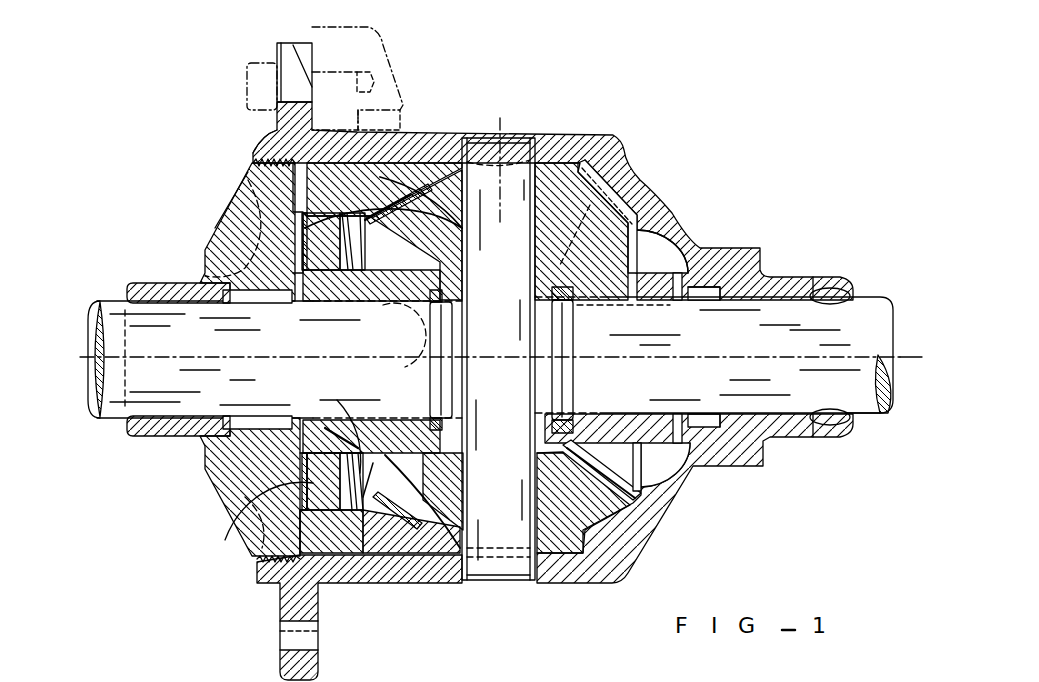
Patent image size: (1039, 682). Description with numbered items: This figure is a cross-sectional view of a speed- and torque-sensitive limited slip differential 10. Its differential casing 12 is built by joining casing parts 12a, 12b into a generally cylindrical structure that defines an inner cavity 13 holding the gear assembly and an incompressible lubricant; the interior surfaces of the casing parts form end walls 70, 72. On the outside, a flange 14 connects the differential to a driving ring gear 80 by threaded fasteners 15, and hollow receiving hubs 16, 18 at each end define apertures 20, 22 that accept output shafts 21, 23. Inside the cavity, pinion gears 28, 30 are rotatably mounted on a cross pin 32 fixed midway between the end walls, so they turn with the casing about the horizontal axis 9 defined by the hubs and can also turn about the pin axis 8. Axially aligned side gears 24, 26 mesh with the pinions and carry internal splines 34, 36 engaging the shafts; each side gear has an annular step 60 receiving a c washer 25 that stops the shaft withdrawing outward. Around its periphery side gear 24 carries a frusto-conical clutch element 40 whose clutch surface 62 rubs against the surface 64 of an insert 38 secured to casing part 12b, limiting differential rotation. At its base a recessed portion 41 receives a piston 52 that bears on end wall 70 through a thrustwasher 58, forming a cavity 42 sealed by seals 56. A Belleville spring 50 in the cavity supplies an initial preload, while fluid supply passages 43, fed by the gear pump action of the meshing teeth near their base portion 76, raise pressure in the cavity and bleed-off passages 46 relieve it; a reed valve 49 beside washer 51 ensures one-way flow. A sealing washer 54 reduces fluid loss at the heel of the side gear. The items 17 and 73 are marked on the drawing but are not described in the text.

The axis 8 is at (500, 140).
The axis 9 is at (907, 357).
The limited slip differential 10 is at (738, 140).
The differential casing 12 is at (738, 247).
The casing part 12a is at (213, 257).
The casing part 12b is at (613, 140).
The inner cavity 13 is at (597, 530).
The flange 14 is at (277, 45).
The threaded fastener 15 is at (242, 68).
The receiving hub 16 is at (143, 282).
The flange 17 is at (267, 128).
The receiving hub 18 is at (795, 277).
The aperture 20 is at (123, 298).
The output shaft 21 is at (105, 422).
The aperture 22 is at (853, 292).
The output shaft 23 is at (863, 417).
The side gear 24 is at (397, 423).
The c washer 25 is at (545, 307).
The side gear 26 is at (660, 290).
The pinion gear 28 is at (550, 183).
The pinion gear 30 is at (560, 522).
The cross pin 32 is at (520, 147).
The internal spline 34 is at (405, 360).
The internal spline 36 is at (610, 314).
The insert 38 is at (437, 167).
The frusto-conical clutch element 40 is at (405, 103).
The recessed portion 41 is at (325, 555).
The cavity 42 is at (364, 262).
The fluid supply passage 43 is at (415, 257).
The bleed-off passage 46 is at (347, 272).
The reed valve 49 is at (460, 217).
The Belleville spring 50 is at (357, 440).
The washer 51 is at (420, 163).
The piston 52 is at (233, 207).
The sealing washer 54 is at (438, 170).
The seal 56 is at (307, 287).
The thrustwasher 58 is at (253, 187).
The annular step 60 is at (560, 432).
The clutch surface 62 is at (253, 161).
The insert surface 64 is at (390, 182).
The end wall 70 is at (222, 227).
The end wall 72 is at (672, 222).
The gear hub 73 is at (313, 270).
The base portion 76 is at (373, 255).
The driving ring gear 80 is at (382, 45).